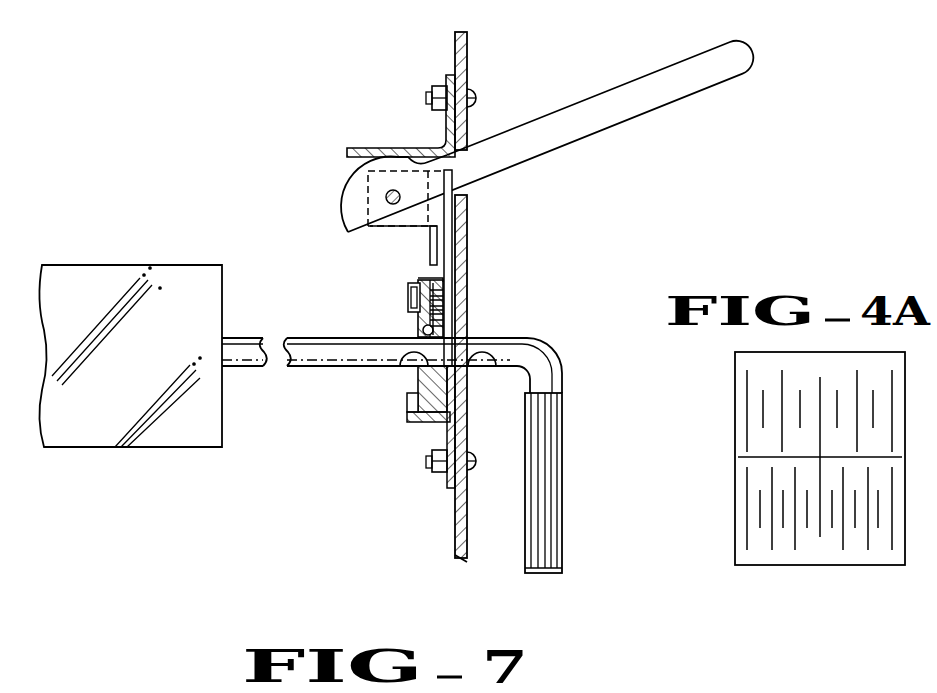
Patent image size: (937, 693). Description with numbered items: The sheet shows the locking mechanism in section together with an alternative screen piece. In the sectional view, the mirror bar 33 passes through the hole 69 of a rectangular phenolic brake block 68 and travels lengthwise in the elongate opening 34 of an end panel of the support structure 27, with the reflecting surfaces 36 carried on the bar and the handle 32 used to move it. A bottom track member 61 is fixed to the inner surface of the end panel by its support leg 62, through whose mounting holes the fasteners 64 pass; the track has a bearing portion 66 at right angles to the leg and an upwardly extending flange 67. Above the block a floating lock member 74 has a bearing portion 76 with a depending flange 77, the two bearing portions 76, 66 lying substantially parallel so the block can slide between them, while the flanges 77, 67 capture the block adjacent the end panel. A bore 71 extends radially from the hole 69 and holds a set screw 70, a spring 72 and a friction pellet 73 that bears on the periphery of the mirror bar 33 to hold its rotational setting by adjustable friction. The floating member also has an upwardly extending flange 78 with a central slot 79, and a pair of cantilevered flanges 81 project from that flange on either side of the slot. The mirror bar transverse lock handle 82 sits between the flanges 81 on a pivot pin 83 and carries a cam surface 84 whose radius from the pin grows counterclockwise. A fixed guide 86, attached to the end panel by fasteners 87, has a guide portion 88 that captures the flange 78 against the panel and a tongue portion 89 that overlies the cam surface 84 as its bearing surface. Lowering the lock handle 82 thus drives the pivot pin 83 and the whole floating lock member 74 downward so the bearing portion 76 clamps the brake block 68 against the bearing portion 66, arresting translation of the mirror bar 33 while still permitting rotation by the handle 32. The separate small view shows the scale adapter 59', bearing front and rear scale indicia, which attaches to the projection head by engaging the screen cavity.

In FIG. 7, the support structure 27 is at (472, 31).
In FIG. 7, the fixed guide 86 is at (440, 76).
In FIG. 7, the fasteners 87 is at (427, 98).
In FIG. 7, the tongue portion 89 is at (380, 148).
In FIG. 7, the cam surface 84 is at (352, 173).
In FIG. 7, the pivot pin 83 is at (385, 198).
In FIG. 7, the cantilevered flanges 81 is at (367, 218).
In FIG. 7, the mirror bar transverse lock handle 82 is at (663, 72).
In FIG. 7, the guide portion 88 is at (437, 249).
In FIG. 7, the slot 79 is at (446, 203).
In FIG. 7, the floating lock member 74 is at (421, 274).
In FIG. 7, the bearing portion 76 is at (409, 284).
In FIG. 7, the depending flange 77 is at (417, 299).
In FIG. 7, the friction pellet 73 is at (425, 327).
In FIG. 7, the upwardly extending flange 78 is at (433, 318).
In FIG. 7, the set screw 70 is at (452, 285).
In FIG. 7, the bore 71 is at (441, 318).
In FIG. 7, the spring 72 is at (445, 321).
In FIG. 7, the mirror bar 33 is at (293, 338).
In FIG. 7, the elongate opening 34 is at (484, 356).
In FIG. 7, the hole 69 is at (410, 356).
In FIG. 7, the phenolic brake block 68 is at (414, 385).
In FIG. 7, the flange 67 is at (407, 413).
In FIG. 7, the bearing portion 66 is at (428, 444).
In FIG. 7, the mounting holes and fasteners 64 is at (425, 463).
In FIG. 7, the support leg 62 is at (450, 483).
In FIG. 7, the bottom track member 61 is at (460, 437).
In FIG. 7, the handle 32 is at (563, 470).
In FIG. 7, the reflecting surfaces 36 is at (162, 356).
In FIG. 4A, the scale adapter 59' is at (771, 458).